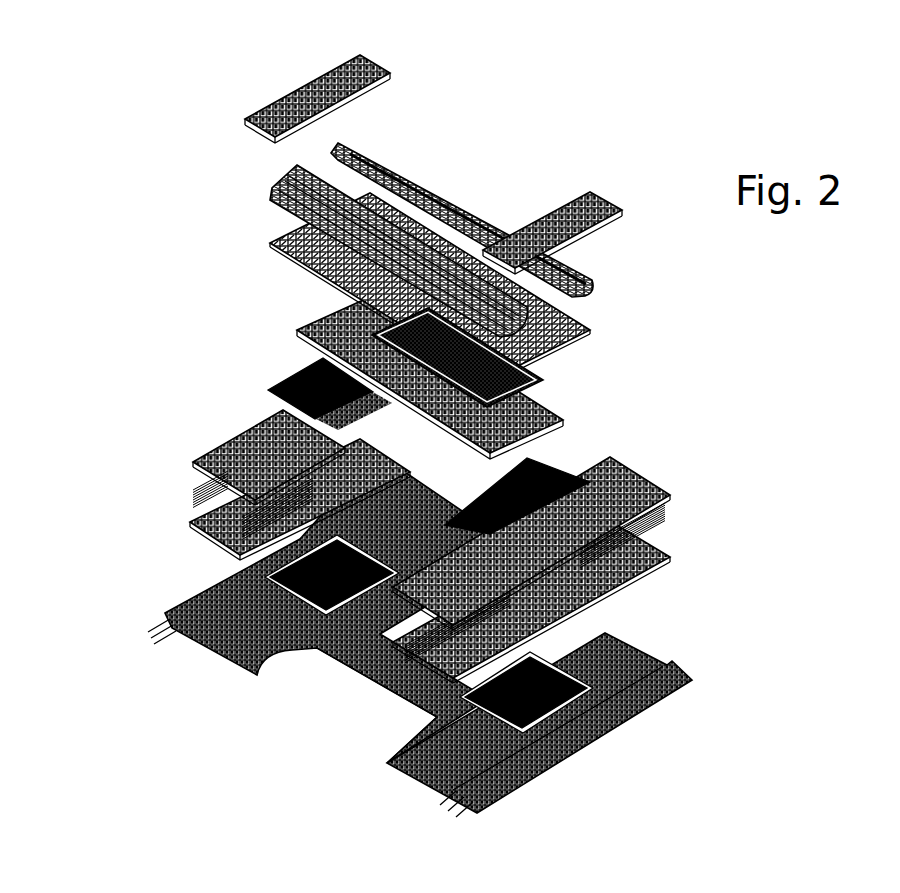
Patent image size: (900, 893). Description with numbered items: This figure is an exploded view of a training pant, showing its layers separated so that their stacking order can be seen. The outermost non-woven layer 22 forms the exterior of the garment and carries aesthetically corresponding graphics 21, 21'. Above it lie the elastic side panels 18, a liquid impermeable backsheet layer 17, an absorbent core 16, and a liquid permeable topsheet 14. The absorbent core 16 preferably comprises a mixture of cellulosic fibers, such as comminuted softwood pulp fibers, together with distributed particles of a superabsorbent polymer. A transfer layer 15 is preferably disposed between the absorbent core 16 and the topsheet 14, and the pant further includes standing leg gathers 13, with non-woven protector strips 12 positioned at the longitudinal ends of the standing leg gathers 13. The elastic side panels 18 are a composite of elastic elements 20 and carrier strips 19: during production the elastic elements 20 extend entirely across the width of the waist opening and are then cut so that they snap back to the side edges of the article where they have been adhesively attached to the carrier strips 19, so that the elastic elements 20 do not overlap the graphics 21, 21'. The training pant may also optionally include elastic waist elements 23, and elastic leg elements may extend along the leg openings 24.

The non-woven protector strips 12 is at (457, 149).
The standing leg gathers 13 is at (409, 209).
The liquid permeable topsheet 14 is at (463, 288).
The transfer layer 15 is at (525, 357).
The absorbent core 16 is at (383, 362).
The liquid impermeable backsheet layer 17 is at (298, 378).
The elastic side panels 18 is at (435, 534).
The carrier strips 19 is at (539, 546).
The elastic elements 20 is at (270, 472).
The graphics 21 is at (591, 655).
The graphics 21' is at (290, 575).
The outermost non-woven layer 22 is at (539, 725).
The elastic waist elements 23 is at (311, 608).
The leg openings 24 is at (363, 723).